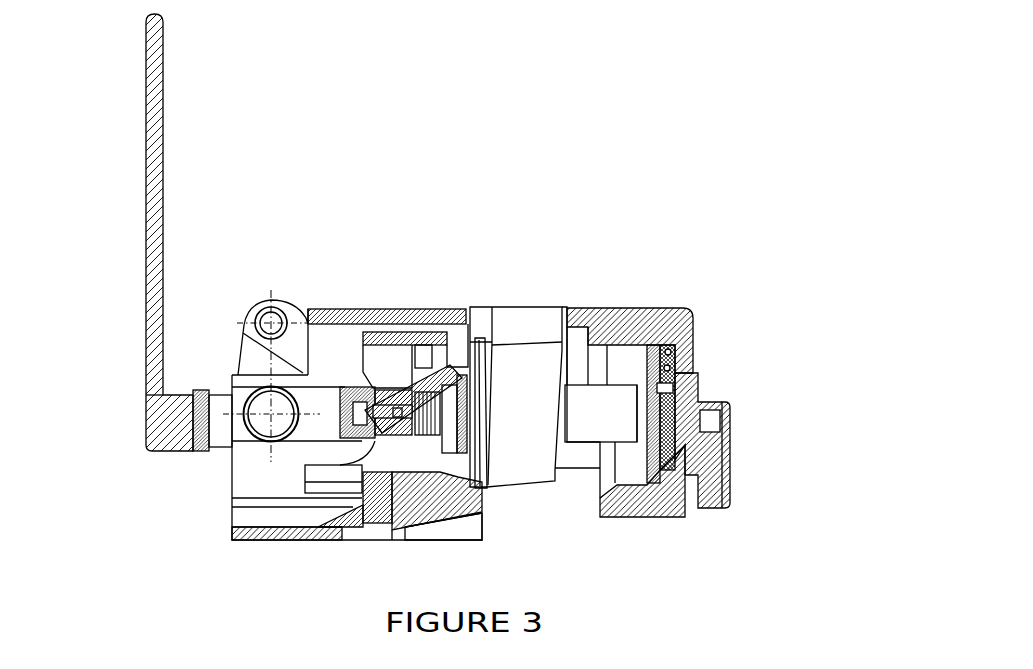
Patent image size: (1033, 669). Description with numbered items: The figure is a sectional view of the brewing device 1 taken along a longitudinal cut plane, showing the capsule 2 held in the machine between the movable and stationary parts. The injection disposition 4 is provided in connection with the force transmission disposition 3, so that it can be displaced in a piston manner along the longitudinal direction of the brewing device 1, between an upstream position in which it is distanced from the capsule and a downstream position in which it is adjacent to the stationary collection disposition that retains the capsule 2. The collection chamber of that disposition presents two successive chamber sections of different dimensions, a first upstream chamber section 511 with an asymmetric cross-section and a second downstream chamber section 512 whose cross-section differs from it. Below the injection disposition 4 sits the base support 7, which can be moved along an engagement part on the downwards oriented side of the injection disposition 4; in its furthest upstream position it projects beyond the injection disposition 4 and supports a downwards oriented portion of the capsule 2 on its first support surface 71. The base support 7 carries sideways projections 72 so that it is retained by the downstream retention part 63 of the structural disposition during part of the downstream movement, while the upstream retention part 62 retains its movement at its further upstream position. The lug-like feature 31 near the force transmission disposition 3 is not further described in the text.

The brewing device 1 is at (126, 232).
The capsule 2 is at (535, 402).
The force transmission disposition 3 is at (337, 372).
The mounting lug 31 is at (246, 305).
The injection disposition 4 is at (441, 376).
The first upstream chamber section 511 is at (594, 340).
The second downstream chamber section 512 is at (644, 352).
The upstream retention part 62 is at (346, 530).
The base support 7 is at (374, 507).
The sideways projections 72 is at (426, 473).
The downstream retention part 63 is at (466, 526).
The first support surface 71 is at (483, 495).